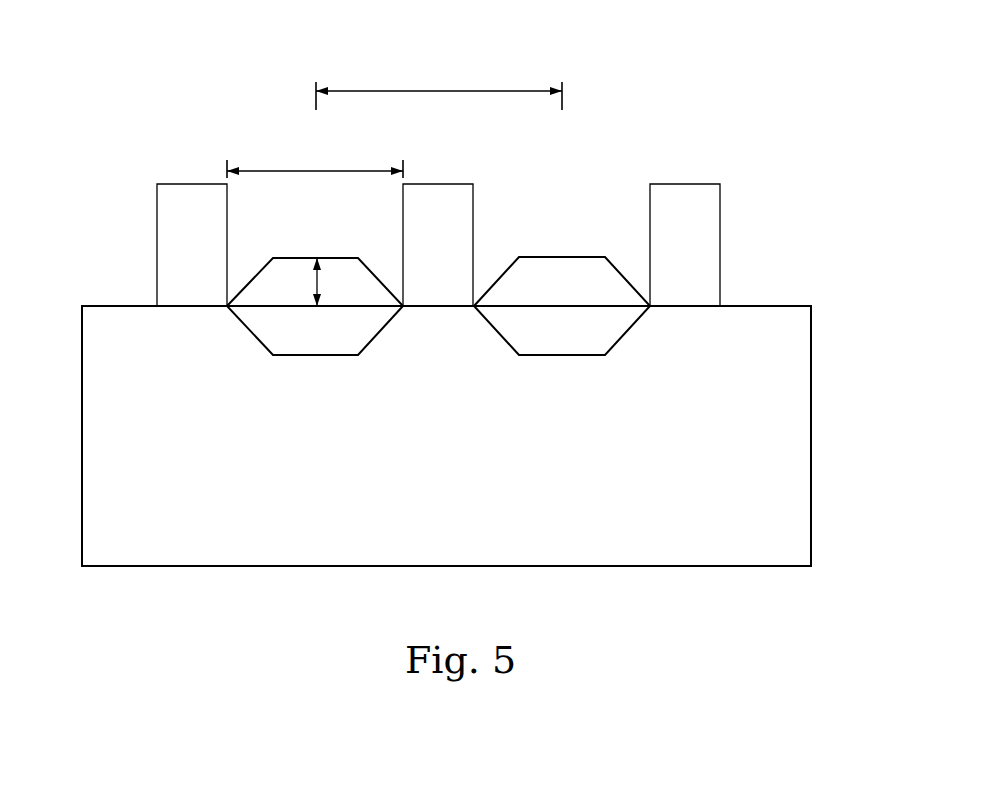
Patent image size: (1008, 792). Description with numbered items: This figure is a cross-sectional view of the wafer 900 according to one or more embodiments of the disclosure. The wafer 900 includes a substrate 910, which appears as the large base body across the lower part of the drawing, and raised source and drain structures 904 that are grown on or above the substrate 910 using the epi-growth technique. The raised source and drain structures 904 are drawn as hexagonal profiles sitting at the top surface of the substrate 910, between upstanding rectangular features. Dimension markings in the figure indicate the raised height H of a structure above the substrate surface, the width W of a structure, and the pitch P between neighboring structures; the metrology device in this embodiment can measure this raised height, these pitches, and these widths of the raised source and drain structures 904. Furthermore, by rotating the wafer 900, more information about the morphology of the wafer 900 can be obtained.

The wafer 900 is at (100, 80).
The raised source and drain structures 904 is at (557, 297).
The substrate 910 is at (789, 384).